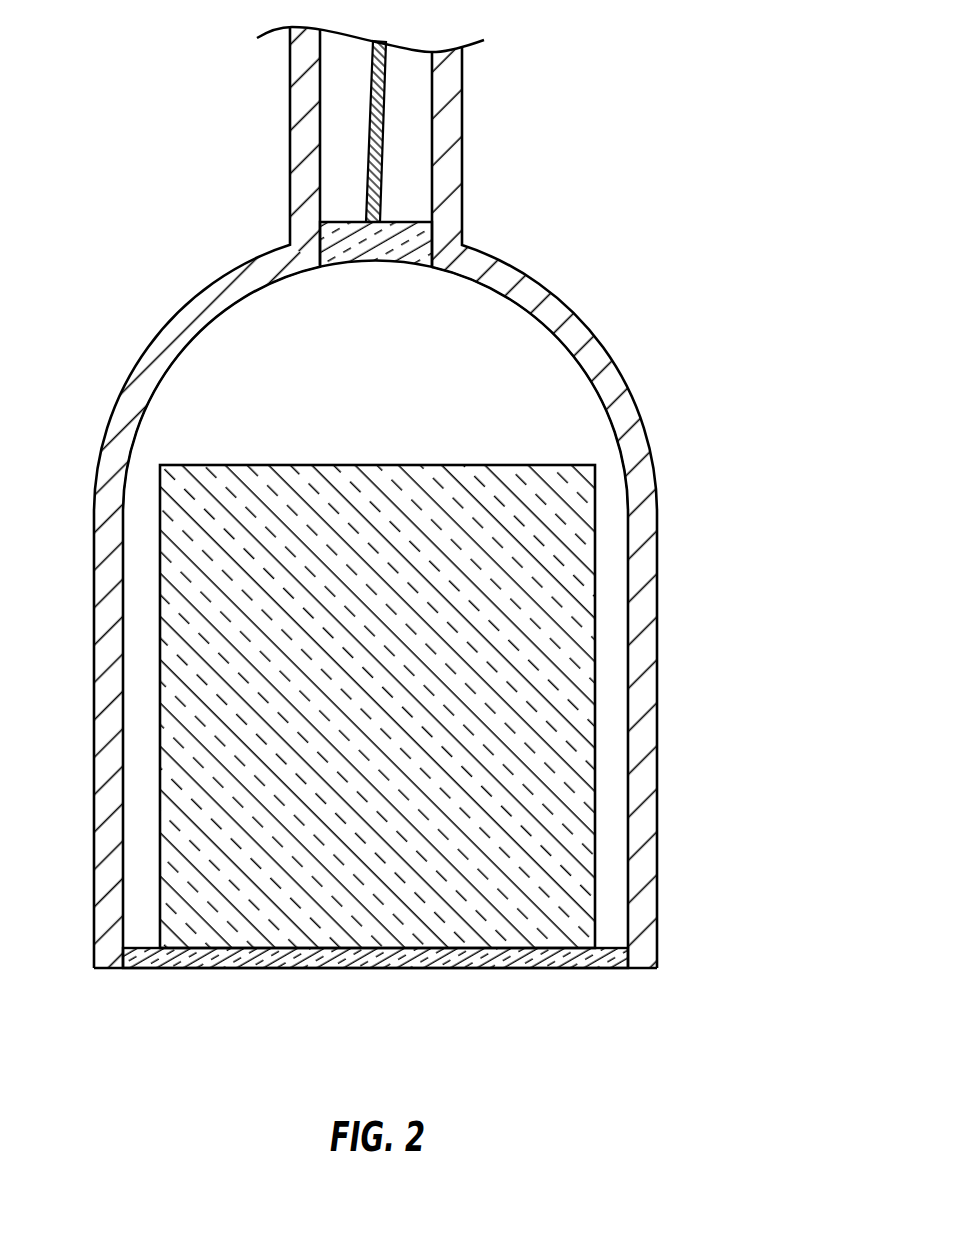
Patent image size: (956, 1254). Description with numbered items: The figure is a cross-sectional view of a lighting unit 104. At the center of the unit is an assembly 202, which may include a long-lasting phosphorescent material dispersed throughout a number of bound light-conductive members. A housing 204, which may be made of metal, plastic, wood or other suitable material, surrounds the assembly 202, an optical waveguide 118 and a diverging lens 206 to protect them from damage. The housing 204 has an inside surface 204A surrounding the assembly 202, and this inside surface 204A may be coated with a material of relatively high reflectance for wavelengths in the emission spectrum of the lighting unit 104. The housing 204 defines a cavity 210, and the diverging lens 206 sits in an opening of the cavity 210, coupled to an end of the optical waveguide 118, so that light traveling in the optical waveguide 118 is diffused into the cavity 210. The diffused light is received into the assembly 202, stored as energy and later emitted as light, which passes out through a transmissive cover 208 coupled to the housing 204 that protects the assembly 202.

The lighting unit 104 is at (439, 539).
The optical waveguide 118 is at (387, 147).
The assembly 202 is at (596, 555).
The housing 204 is at (184, 308).
The inside surface 204A is at (627, 755).
The diverging lens 206 is at (432, 266).
The transmissive cover 208 is at (211, 968).
The cavity 210 is at (510, 408).